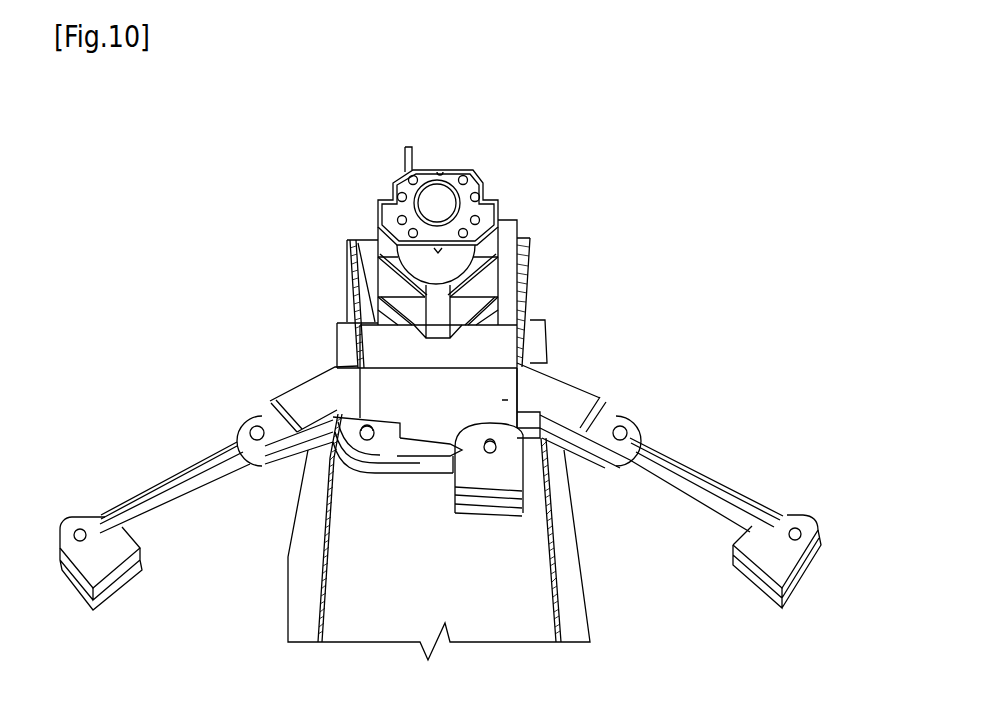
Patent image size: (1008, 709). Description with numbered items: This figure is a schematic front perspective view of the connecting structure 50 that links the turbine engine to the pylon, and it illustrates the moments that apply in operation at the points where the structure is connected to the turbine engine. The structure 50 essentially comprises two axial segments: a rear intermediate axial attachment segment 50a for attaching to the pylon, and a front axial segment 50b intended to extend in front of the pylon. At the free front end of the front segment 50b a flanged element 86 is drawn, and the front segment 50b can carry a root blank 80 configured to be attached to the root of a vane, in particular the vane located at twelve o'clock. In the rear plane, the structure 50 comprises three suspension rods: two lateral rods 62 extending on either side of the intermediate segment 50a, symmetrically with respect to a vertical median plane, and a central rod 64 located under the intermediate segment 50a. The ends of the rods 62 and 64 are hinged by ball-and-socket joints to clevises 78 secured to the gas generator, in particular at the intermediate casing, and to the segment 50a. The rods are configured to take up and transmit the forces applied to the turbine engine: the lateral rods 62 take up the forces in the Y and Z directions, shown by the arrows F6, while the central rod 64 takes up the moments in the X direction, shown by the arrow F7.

The connecting structure 50 is at (543, 238).
The intermediate axial attachment segment 50a is at (519, 395).
The front axial segment 50b is at (370, 268).
The flange 86 is at (492, 177).
The root blank 80 is at (413, 165).
The lateral rods 62 is at (177, 503).
The clevises 78 is at (117, 558).
The central rod 64 is at (411, 474).
The arrows F6 is at (163, 488).
The arrow F7 is at (385, 470).